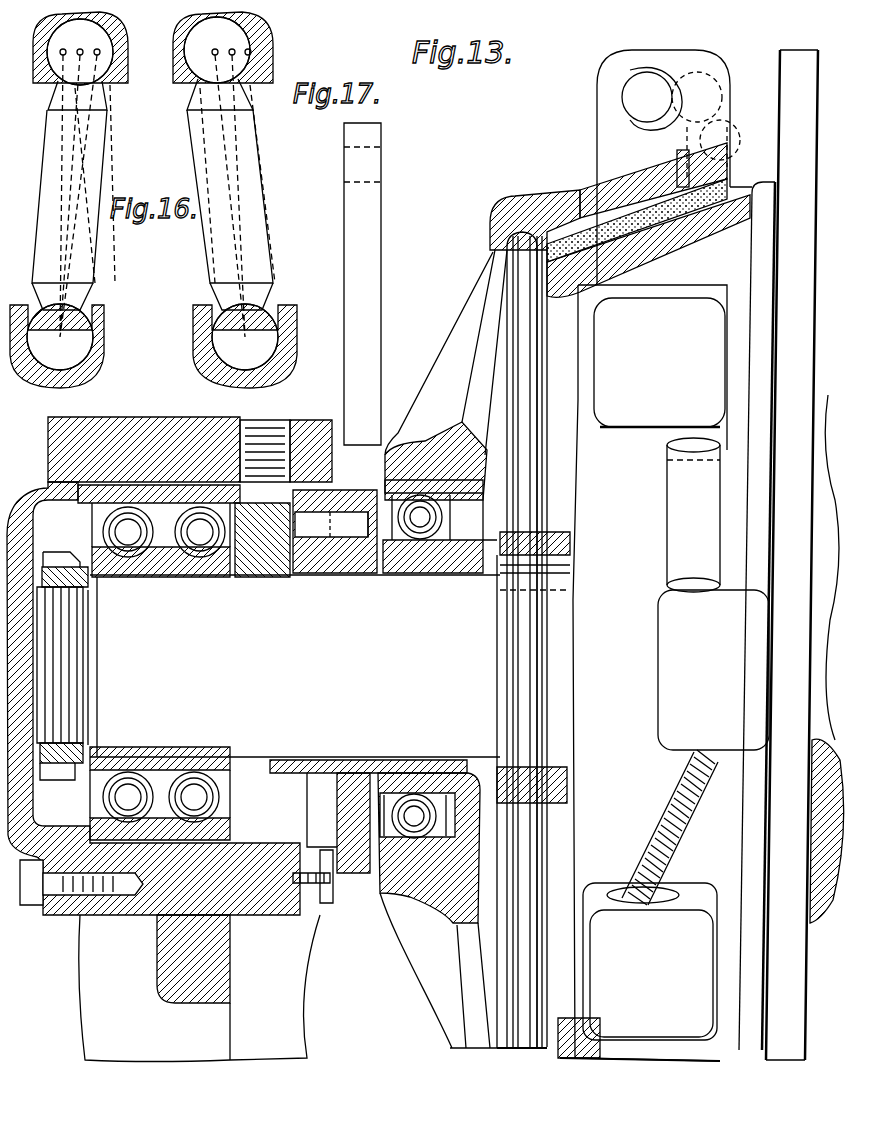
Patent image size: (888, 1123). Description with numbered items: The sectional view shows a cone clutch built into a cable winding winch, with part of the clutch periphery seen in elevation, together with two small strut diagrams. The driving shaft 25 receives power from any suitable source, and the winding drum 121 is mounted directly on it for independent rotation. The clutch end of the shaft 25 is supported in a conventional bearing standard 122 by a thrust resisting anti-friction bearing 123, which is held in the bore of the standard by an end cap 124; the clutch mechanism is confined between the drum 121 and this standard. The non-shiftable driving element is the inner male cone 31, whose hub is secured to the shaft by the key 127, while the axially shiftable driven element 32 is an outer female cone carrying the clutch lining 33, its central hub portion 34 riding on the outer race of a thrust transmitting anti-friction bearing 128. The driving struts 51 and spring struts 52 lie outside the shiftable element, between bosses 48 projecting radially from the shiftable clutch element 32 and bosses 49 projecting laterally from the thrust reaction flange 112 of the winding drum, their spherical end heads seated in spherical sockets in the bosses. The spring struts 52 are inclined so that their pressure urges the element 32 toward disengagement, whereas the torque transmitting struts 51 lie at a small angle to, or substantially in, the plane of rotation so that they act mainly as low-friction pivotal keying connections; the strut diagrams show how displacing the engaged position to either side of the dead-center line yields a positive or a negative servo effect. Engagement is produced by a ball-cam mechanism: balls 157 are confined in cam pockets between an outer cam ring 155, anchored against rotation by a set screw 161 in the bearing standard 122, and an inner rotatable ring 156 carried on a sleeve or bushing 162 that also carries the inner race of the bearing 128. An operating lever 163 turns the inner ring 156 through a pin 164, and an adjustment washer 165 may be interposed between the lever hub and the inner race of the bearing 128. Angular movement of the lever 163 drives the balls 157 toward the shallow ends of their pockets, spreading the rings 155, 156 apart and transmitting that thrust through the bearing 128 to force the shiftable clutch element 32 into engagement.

In FIG. 13, the driving shaft 25 is at (295, 801).
In FIG. 13, the inner male cone 31 is at (655, 260).
In FIG. 13, the shiftable clutch element 32 is at (497, 265).
In FIG. 13, the clutch lining 33 is at (547, 235).
In FIG. 13, the central hub portion 34 is at (445, 455).
In FIG. 13, the bosses 48 is at (605, 97).
In FIG. 13, the bosses 49 is at (740, 105).
In FIG. 16, the driving struts 51 is at (95, 163).
In FIG. 17, the driving struts 51 is at (250, 188).
In FIG. 13, the driving struts 51 is at (680, 523).
In FIG. 13, the spring struts 52 is at (655, 818).
In FIG. 13, the support plate 112 is at (808, 250).
In FIG. 13, the winding drum 121 is at (833, 405).
In FIG. 13, the bearing standard 122 is at (157, 966).
In FIG. 13, the thrust resisting anti-friction bearing 123 is at (195, 548).
In FIG. 13, the end cap 124 is at (58, 440).
In FIG. 13, the key 127 is at (545, 565).
In FIG. 13, the thrust transmitting anti-friction bearing 128 is at (420, 540).
In FIG. 13, the outer cam ring 155 is at (280, 557).
In FIG. 13, the inner cam ring 156 is at (325, 555).
In FIG. 13, the balls 157 is at (270, 780).
In FIG. 13, the set screw 161 is at (262, 460).
In FIG. 13, the sleeve 162 is at (350, 773).
In FIG. 13, the operating lever 163 is at (362, 278).
In FIG. 13, the pin 164 is at (335, 535).
In FIG. 13, the adjustment washer 165 is at (375, 537).